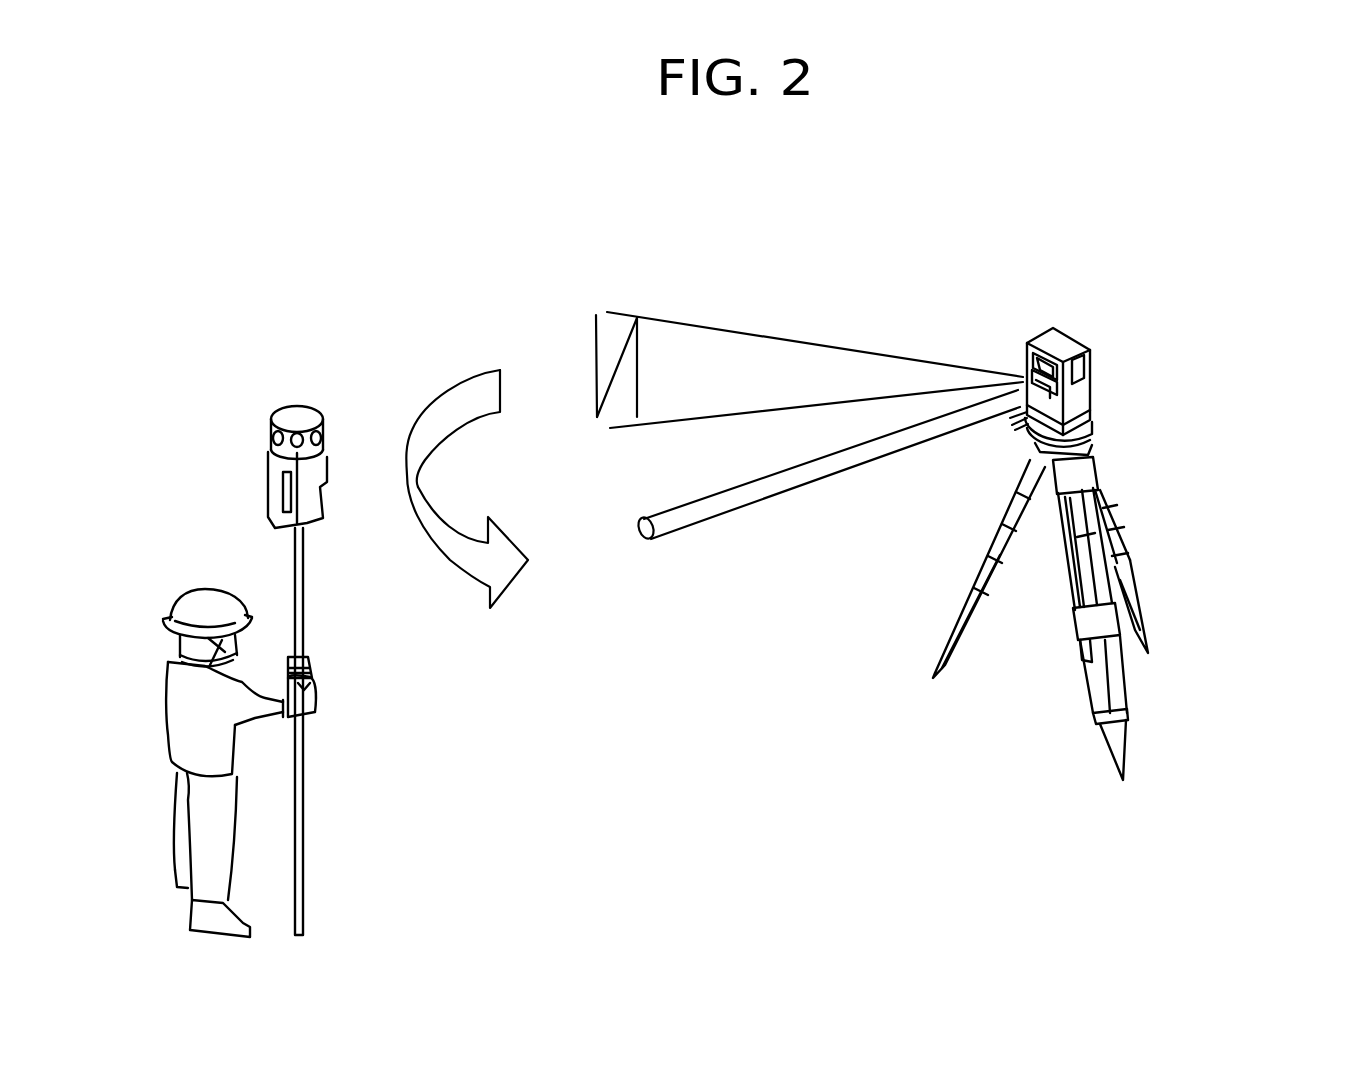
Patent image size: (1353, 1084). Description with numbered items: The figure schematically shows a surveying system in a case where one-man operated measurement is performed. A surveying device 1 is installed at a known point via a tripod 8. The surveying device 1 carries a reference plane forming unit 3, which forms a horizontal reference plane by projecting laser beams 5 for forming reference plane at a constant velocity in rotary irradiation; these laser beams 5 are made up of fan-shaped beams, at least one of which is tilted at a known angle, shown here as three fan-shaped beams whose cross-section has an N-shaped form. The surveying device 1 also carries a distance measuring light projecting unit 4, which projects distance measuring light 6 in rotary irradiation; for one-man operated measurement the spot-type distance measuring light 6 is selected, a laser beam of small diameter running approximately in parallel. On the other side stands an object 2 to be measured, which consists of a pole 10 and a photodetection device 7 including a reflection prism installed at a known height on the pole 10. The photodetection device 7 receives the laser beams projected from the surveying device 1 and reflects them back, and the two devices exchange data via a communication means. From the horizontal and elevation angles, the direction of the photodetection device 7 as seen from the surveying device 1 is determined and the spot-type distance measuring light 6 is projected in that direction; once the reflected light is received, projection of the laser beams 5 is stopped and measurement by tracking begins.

The surveying device 1 is at (1010, 423).
The object to be measured 2 is at (323, 625).
The reference plane forming unit 3 is at (1093, 352).
The distance measuring light projecting unit 4 is at (1093, 390).
The laser beams for forming reference plane 5 is at (757, 332).
The distance measuring light 6 is at (755, 502).
The photodetection device 7 is at (267, 475).
The tripod 8 is at (1127, 553).
The pole 10 is at (307, 828).